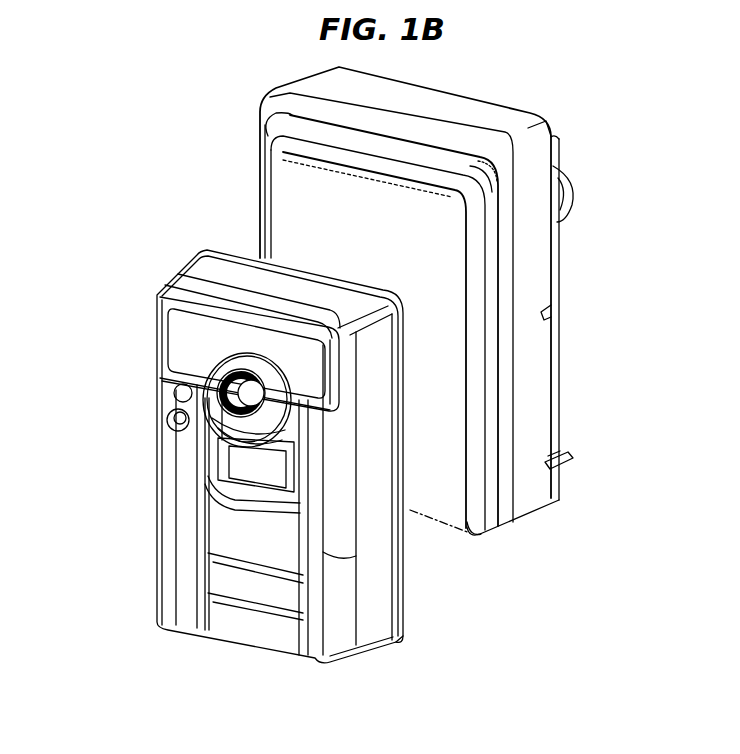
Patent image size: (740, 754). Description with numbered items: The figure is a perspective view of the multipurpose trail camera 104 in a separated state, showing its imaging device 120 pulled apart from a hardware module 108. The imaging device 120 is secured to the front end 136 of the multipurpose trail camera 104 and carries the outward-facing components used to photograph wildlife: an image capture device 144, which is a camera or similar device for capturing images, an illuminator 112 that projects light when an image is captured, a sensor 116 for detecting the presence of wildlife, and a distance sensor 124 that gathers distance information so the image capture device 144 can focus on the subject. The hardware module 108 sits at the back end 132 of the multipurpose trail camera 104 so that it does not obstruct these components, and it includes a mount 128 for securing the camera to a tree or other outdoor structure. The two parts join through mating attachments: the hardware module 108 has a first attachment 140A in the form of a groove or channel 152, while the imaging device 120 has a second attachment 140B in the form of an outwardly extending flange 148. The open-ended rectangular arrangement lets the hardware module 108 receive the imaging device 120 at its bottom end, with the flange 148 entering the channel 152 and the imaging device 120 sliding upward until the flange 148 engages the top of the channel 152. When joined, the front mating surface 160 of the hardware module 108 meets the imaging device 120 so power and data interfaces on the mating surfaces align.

The multipurpose trail camera 104 is at (186, 147).
The hardware module 108 is at (496, 100).
The illuminator 112 is at (167, 320).
The sensor 116 is at (226, 470).
The imaging device 120 is at (190, 266).
The distance sensor 124 is at (172, 412).
The mount 128 is at (563, 172).
The back end 132 is at (591, 331).
The front end 136 is at (231, 622).
The first attachment 140A is at (471, 537).
The second attachment 140B is at (400, 645).
The image capture device 144 is at (212, 372).
The flange 148 is at (296, 265).
The channel 152 is at (348, 165).
The front mating surface 160 is at (450, 491).